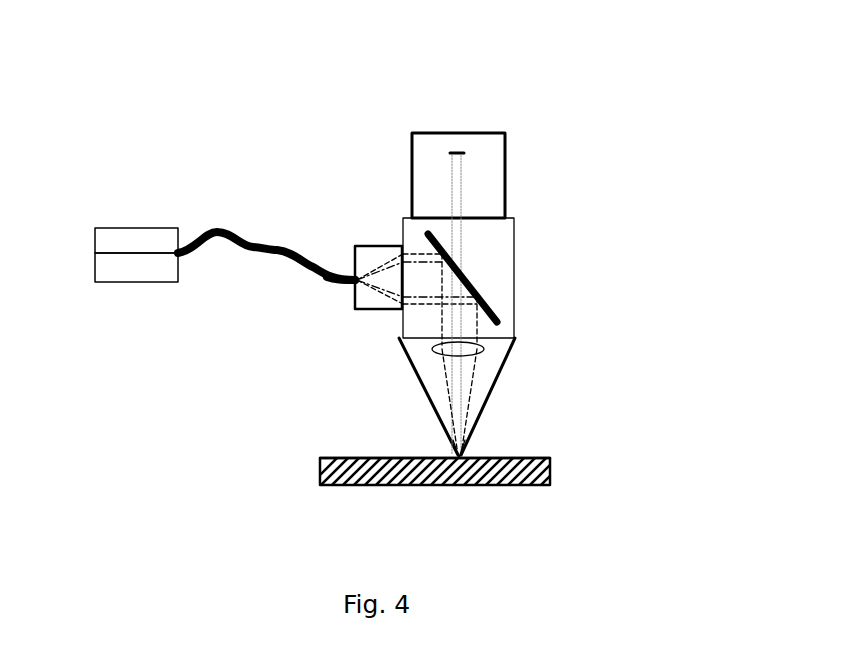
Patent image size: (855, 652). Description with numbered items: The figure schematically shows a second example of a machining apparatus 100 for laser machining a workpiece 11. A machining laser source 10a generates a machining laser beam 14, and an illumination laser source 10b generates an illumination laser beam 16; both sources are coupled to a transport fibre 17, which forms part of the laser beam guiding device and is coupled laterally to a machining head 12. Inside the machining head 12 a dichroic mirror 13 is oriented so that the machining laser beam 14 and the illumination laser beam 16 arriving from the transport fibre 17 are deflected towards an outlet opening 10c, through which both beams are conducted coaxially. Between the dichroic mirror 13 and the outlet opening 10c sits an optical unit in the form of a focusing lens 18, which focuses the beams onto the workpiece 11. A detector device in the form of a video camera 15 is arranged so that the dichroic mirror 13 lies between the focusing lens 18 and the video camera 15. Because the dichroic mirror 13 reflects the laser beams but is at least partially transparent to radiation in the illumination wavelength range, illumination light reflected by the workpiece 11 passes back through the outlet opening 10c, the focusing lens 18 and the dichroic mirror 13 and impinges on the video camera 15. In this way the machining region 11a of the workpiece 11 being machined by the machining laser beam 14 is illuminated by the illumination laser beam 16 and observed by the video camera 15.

The machining apparatus 100 is at (150, 72).
The machining laser source 10a is at (118, 228).
The illumination laser source 10b is at (136, 282).
The machining head 12 is at (323, 242).
The transport fibre 17 is at (331, 285).
The illumination laser beam 16 is at (385, 262).
The machining laser beam 14 is at (382, 309).
The video camera 15 is at (473, 153).
The dichroic mirror 13 is at (497, 313).
The focusing lens 18 is at (484, 349).
The outlet opening 10c is at (427, 448).
The workpiece 11 is at (552, 473).
The machining region 11a is at (473, 448).